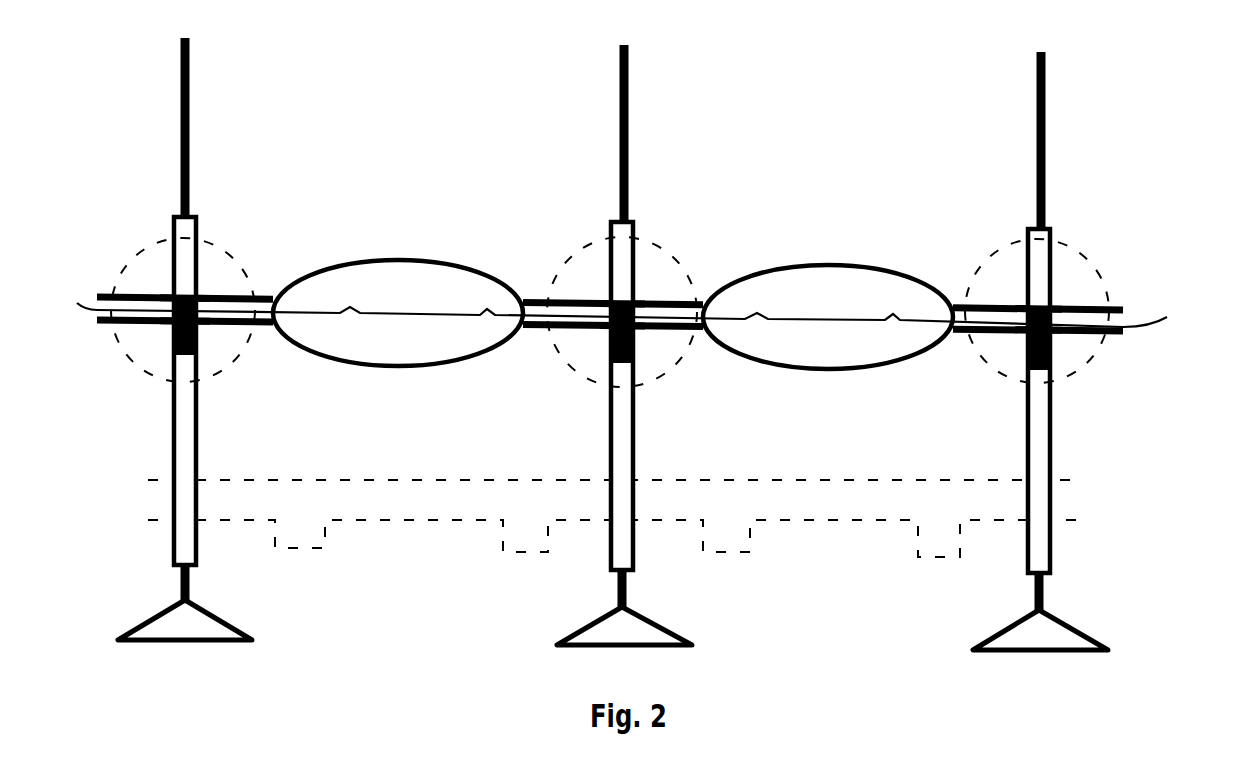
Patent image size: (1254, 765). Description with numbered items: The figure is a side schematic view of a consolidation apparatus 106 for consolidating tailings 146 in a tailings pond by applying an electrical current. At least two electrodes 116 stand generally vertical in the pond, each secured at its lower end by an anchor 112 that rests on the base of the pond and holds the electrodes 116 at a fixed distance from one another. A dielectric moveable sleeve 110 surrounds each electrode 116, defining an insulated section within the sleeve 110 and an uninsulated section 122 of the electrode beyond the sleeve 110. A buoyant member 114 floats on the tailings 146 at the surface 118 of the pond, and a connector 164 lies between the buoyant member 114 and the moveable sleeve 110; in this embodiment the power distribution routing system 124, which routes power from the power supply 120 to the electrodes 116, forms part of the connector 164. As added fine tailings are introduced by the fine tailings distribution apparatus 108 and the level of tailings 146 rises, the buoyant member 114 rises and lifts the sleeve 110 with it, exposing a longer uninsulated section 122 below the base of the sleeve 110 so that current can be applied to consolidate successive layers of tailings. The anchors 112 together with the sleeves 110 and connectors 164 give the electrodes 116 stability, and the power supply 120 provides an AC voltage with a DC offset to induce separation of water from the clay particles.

The consolidation apparatus 106 is at (117, 414).
The fine tailings distribution apparatus 108 is at (818, 525).
The dielectric moveable sleeve 110 is at (182, 497).
The anchor 112 is at (193, 620).
The buoyant member 114 is at (398, 297).
The electrode 116 is at (628, 142).
The surface of the tailings pond 118 is at (1147, 320).
The power supply 120 is at (637, 350).
The uninsulated section 122 is at (626, 587).
The power distribution routing system 124 is at (1078, 320).
The tailings 146 is at (432, 598).
The connector 164 is at (208, 295).